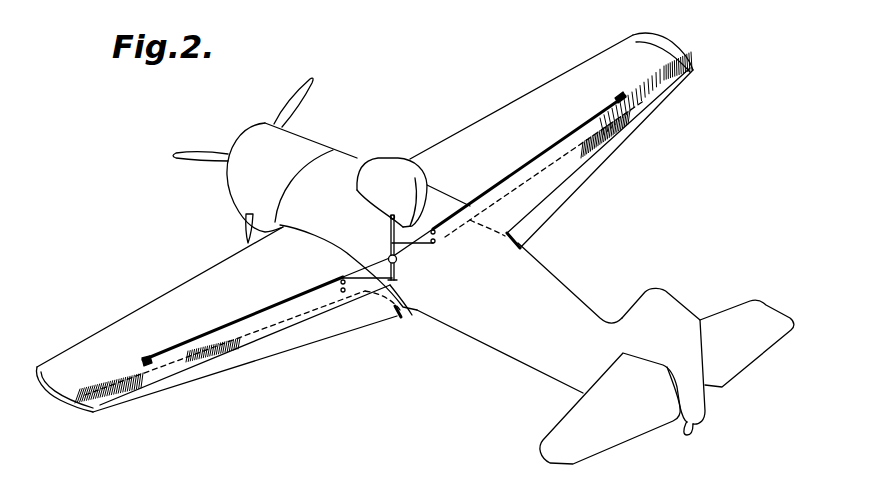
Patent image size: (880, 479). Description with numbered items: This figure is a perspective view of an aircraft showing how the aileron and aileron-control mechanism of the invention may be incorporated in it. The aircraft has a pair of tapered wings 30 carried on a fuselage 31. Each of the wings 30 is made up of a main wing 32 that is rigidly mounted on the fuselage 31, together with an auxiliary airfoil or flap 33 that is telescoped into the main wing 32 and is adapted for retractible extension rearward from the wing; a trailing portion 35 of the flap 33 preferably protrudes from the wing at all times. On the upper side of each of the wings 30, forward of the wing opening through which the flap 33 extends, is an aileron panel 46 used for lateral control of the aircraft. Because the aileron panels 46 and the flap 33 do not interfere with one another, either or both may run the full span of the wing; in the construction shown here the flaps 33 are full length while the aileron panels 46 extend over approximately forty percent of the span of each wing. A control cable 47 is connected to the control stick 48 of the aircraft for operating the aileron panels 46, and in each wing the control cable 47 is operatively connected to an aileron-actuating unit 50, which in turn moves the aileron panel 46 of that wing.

The tapered wings 30 is at (558, 74).
The fuselage 31 is at (347, 163).
The main wing 32 is at (490, 126).
The auxiliary airfoil or flap 33 is at (596, 174).
The trailing portion of the flap 35 is at (537, 220).
The aileron panel 46 is at (647, 107).
The control cable 47 is at (317, 287).
The control stick 48 is at (390, 240).
The aileron-actuating unit 50 is at (617, 90).